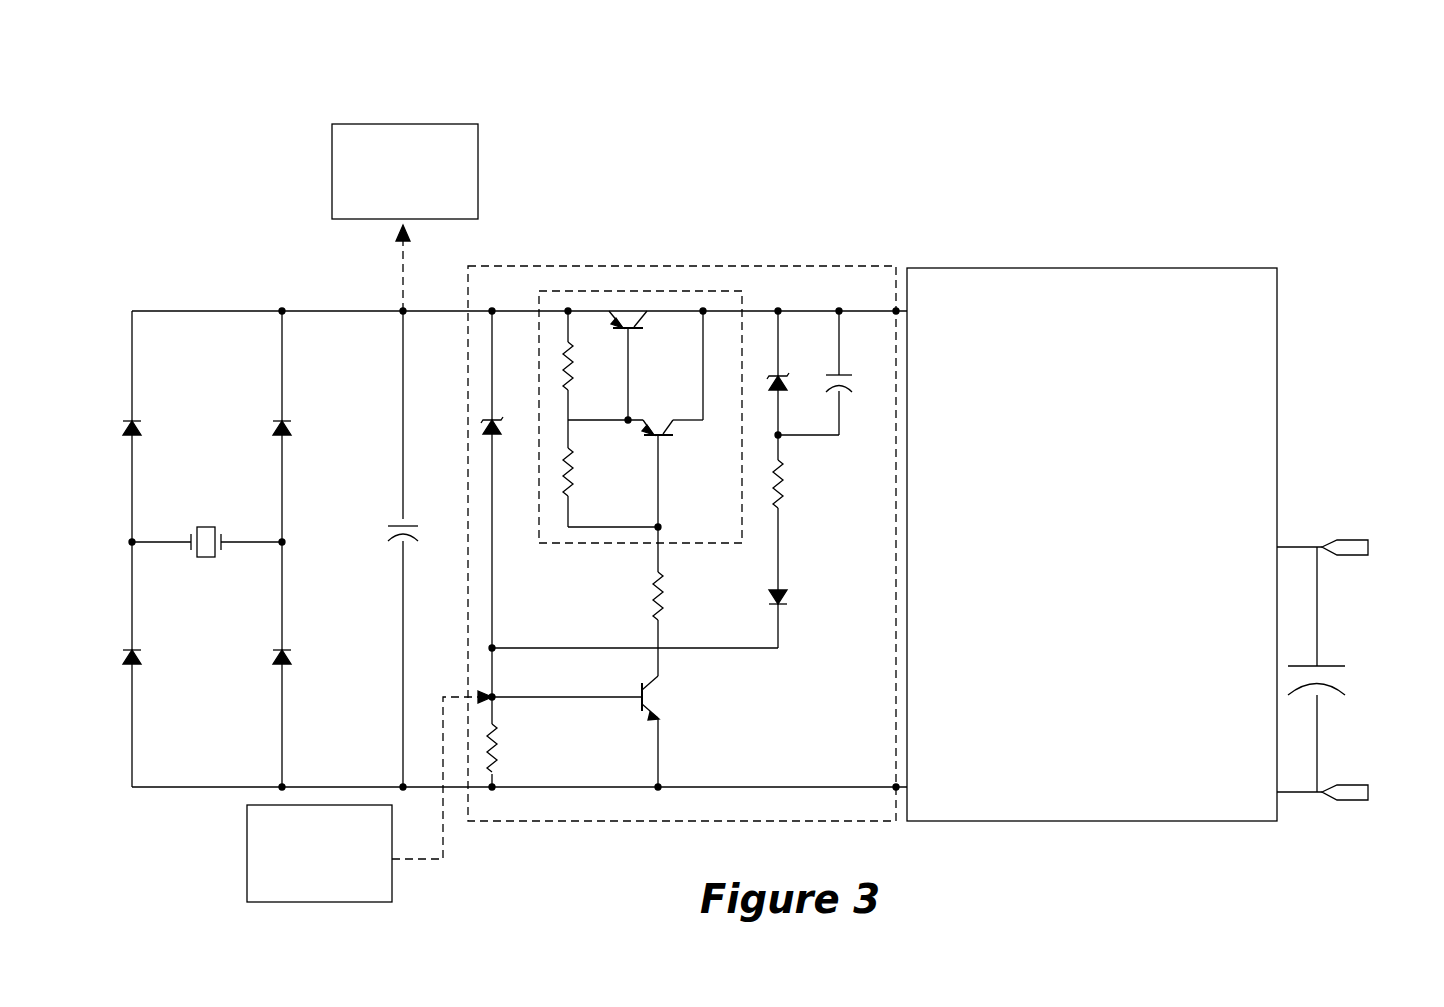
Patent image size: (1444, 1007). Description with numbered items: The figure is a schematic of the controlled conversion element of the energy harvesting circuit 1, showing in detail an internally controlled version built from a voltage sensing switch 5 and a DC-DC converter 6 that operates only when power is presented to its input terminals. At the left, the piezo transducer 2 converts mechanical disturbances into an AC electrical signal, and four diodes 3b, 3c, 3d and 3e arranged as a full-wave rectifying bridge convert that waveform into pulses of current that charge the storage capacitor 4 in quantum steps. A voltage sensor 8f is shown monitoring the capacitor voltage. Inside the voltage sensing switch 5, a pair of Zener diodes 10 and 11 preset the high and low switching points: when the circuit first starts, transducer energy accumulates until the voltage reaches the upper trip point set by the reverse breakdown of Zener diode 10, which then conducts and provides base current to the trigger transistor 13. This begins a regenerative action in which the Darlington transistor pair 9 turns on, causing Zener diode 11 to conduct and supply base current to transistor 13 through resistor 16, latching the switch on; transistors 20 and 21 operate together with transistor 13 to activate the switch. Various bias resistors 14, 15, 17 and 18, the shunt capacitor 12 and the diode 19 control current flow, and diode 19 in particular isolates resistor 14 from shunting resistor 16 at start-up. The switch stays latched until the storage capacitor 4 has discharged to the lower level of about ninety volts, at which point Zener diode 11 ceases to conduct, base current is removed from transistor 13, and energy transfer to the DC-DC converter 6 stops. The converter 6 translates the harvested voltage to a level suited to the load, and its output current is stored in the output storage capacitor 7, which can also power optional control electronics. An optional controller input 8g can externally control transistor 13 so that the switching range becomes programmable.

The circuit 1 is at (192, 146).
The piezo transducer 2 is at (207, 548).
The diode 3b is at (162, 432).
The diode 3c is at (162, 659).
The diode 3d is at (307, 432).
The diode 3e is at (307, 659).
The storage capacitor 4 is at (434, 528).
The voltage sensing switch 5 is at (645, 265).
The DC-DC converter 6 is at (1120, 268).
The output storage capacitor 7 is at (1333, 669).
The voltage sensor 8f is at (480, 124).
The external controller signal 8g is at (393, 903).
The Darlington transistor pair 9 is at (717, 291).
The Zener diode 10 is at (518, 440).
The Zener diode 11 is at (803, 385).
The shunt capacitor 12 is at (855, 373).
The transistor 13 is at (635, 717).
The bias resistor 14 is at (800, 521).
The bias resistor 15 is at (679, 618).
The bias resistor 16 is at (512, 745).
The bias resistor 17 is at (610, 473).
The bias resistor 18 is at (588, 365).
The diode 19 is at (797, 596).
The transistor 20 is at (677, 496).
The transistor 21 is at (656, 365).